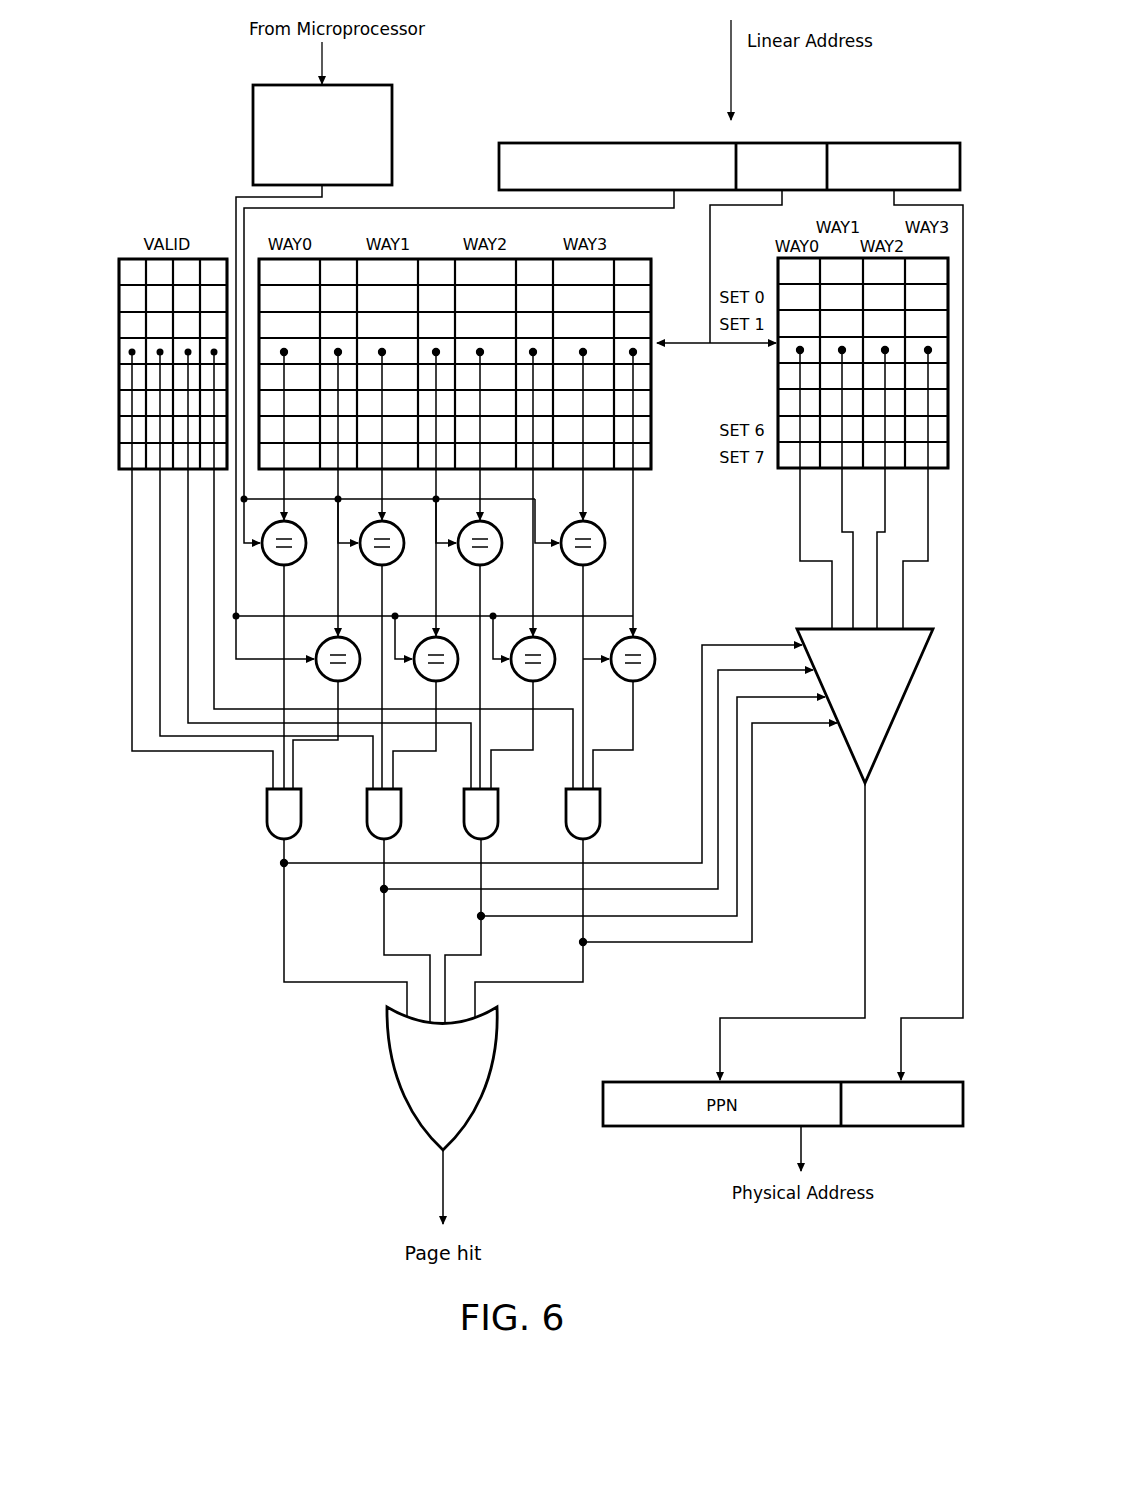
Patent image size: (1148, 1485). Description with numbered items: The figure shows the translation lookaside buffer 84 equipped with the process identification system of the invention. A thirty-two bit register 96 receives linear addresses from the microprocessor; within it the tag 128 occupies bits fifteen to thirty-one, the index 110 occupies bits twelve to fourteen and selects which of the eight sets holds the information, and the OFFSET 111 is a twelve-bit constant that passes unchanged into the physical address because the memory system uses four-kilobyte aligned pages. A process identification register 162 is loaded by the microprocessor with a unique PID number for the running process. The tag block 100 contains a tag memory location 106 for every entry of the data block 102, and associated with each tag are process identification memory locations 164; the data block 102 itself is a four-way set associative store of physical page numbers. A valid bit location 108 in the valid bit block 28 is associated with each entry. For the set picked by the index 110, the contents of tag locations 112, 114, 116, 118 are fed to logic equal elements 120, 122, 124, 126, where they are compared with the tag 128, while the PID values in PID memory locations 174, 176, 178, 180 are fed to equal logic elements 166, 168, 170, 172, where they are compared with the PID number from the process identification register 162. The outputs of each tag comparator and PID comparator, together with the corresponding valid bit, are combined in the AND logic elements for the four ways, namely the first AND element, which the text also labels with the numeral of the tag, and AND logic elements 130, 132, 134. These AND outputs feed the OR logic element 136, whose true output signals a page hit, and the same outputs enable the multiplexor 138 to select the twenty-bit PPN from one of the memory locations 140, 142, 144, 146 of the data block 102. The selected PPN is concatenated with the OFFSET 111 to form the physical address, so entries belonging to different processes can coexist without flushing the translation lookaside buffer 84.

The translation lookaside buffer 84 is at (140, 90).
The process identification register 162 is at (392, 148).
The 32-bit register 96 is at (499, 164).
The tag 128 is at (280, 836).
The index 110 is at (781, 145).
The OFFSET 111 is at (878, 145).
The valid bit location 108 is at (118, 270).
The valid bit block 28 is at (119, 352).
The tag block 100 is at (652, 458).
The tag memory location 106 is at (605, 278).
The process identification memory locations 164 is at (646, 280).
The tag location 112 is at (308, 340).
The tag location 114 is at (406, 340).
The tag location 116 is at (504, 340).
The tag location 118 is at (607, 340).
The PID memory location 174 is at (349, 342).
The PID memory location 176 is at (447, 342).
The PID memory location 178 is at (544, 342).
The PID memory location 180 is at (644, 342).
The data block 102 is at (778, 353).
The memory location 140 is at (819, 334).
The memory location 142 is at (862, 334).
The memory location 144 is at (904, 334).
The memory location 146 is at (944, 340).
The logic equal element 120 is at (299, 559).
The logic equal element 122 is at (397, 559).
The logic equal element 124 is at (495, 559).
The logic equal element 126 is at (598, 559).
The equal logic element 166 is at (353, 675).
The equal logic element 168 is at (451, 675).
The equal logic element 170 is at (548, 675).
The equal logic element 172 is at (648, 675).
The AND logic element 130 is at (380, 836).
The AND logic element 132 is at (477, 836).
The AND logic element 134 is at (580, 836).
The OR logic element 136 is at (442, 1115).
The multiplexor 138 is at (827, 704).